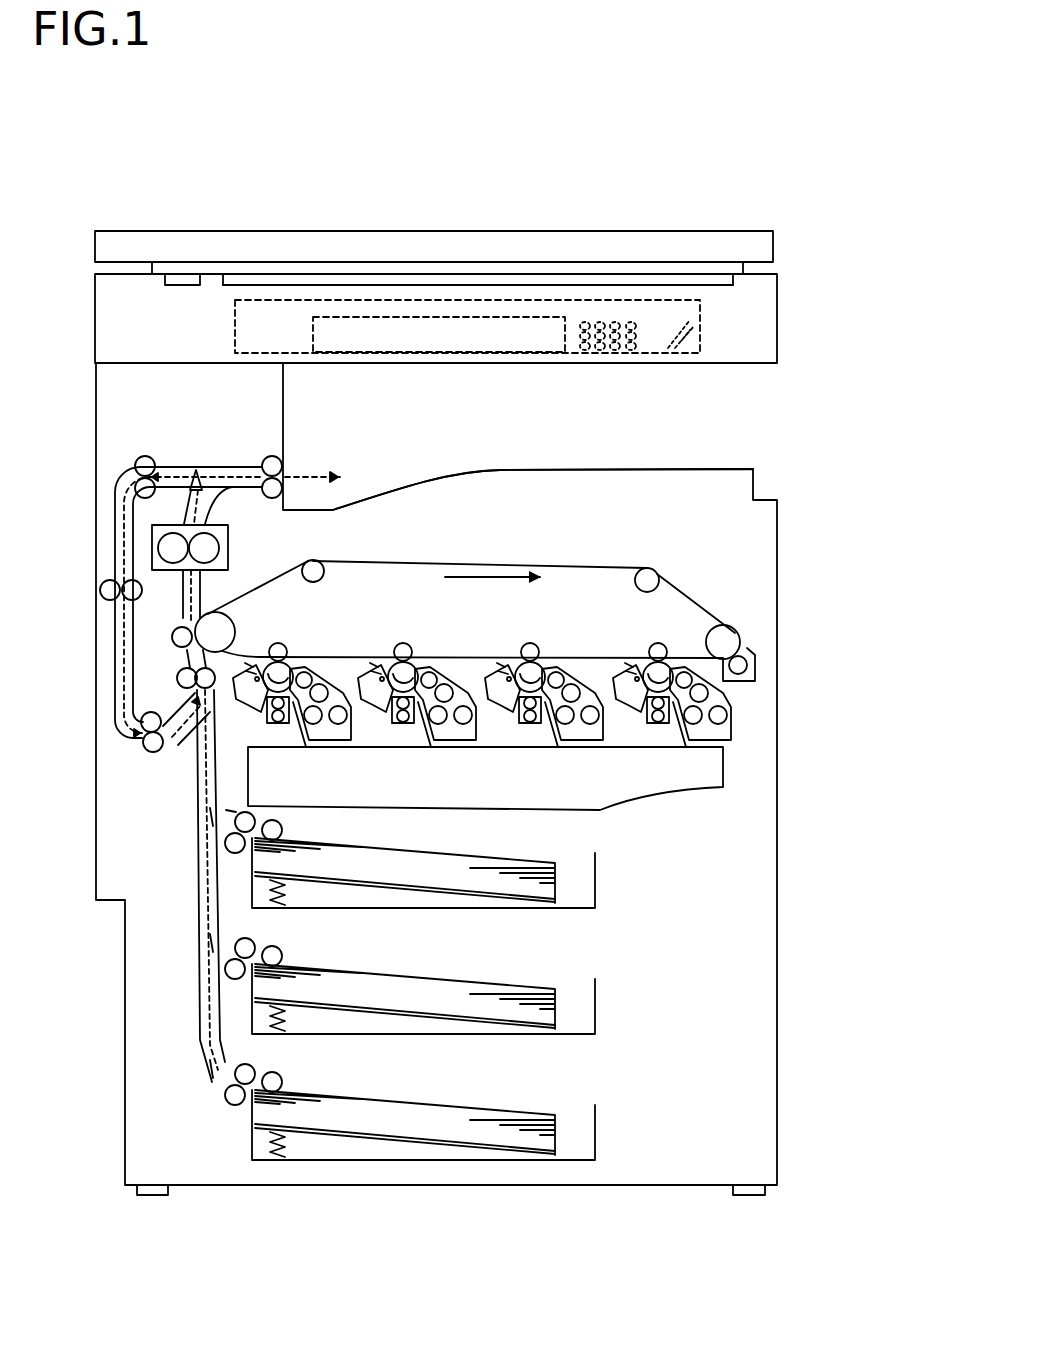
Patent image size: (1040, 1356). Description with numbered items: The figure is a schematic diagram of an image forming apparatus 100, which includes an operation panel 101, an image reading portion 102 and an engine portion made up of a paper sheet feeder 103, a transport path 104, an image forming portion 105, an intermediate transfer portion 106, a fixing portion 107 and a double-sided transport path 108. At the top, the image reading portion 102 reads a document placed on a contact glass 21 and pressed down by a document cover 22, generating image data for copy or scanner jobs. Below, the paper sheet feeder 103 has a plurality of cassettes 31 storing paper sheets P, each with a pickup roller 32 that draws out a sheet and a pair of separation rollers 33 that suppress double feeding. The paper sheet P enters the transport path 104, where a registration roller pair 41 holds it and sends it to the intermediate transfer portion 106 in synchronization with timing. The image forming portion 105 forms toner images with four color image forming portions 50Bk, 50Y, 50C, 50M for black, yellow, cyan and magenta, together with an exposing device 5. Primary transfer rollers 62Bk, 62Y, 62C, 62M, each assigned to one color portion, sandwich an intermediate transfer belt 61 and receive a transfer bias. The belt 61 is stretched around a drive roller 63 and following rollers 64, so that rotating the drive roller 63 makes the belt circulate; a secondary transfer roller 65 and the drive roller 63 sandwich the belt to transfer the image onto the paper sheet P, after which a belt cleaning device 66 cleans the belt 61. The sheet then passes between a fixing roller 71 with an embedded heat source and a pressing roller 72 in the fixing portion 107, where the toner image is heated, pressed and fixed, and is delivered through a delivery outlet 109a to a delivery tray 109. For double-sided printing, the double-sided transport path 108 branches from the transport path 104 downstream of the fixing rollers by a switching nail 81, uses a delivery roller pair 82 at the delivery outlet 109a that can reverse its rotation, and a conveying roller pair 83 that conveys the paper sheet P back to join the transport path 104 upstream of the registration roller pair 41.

The image forming apparatus 100 is at (129, 229).
The operation panel 101 is at (228, 333).
The image reading portion 102 is at (760, 372).
The contact glass 21 is at (512, 290).
The document cover 22 is at (646, 240).
The double-sided transport path 108 is at (110, 491).
The delivery tray 109 is at (436, 472).
The delivery outlet 109a is at (287, 463).
The conveying roller pair 83 is at (146, 455).
The delivery roller pair 82 is at (266, 457).
The switching nail 81 is at (196, 468).
The fixing portion 107 is at (232, 538).
The pressing roller 72 is at (160, 548).
The fixing roller 71 is at (213, 552).
The intermediate transfer belt 61 is at (452, 562).
The following rollers 64 is at (324, 574).
The drive roller 63 is at (212, 613).
The secondary transfer roller 65 is at (172, 636).
The belt cleaning device 66 is at (748, 665).
The intermediate transfer portion 106 is at (703, 577).
The image forming portion 105 is at (742, 733).
The primary transfer roller 62Bk is at (284, 654).
The primary transfer roller 62Y is at (409, 654).
The primary transfer roller 62C is at (536, 654).
The primary transfer roller 62M is at (652, 650).
The image forming portion 50Bk is at (279, 730).
The image forming portion 50Y is at (401, 730).
The image forming portion 50C is at (529, 730).
The image forming portion 50M is at (655, 730).
The exposing device 5 is at (724, 778).
The transport path 104 is at (190, 763).
The registration roller pair 41 is at (178, 680).
The paper sheet feeder 103 is at (608, 886).
The cassettes 31 is at (603, 906).
The pickup roller 32 is at (283, 830).
The separation rollers 33 is at (237, 851).
The paper sheet P is at (446, 861).